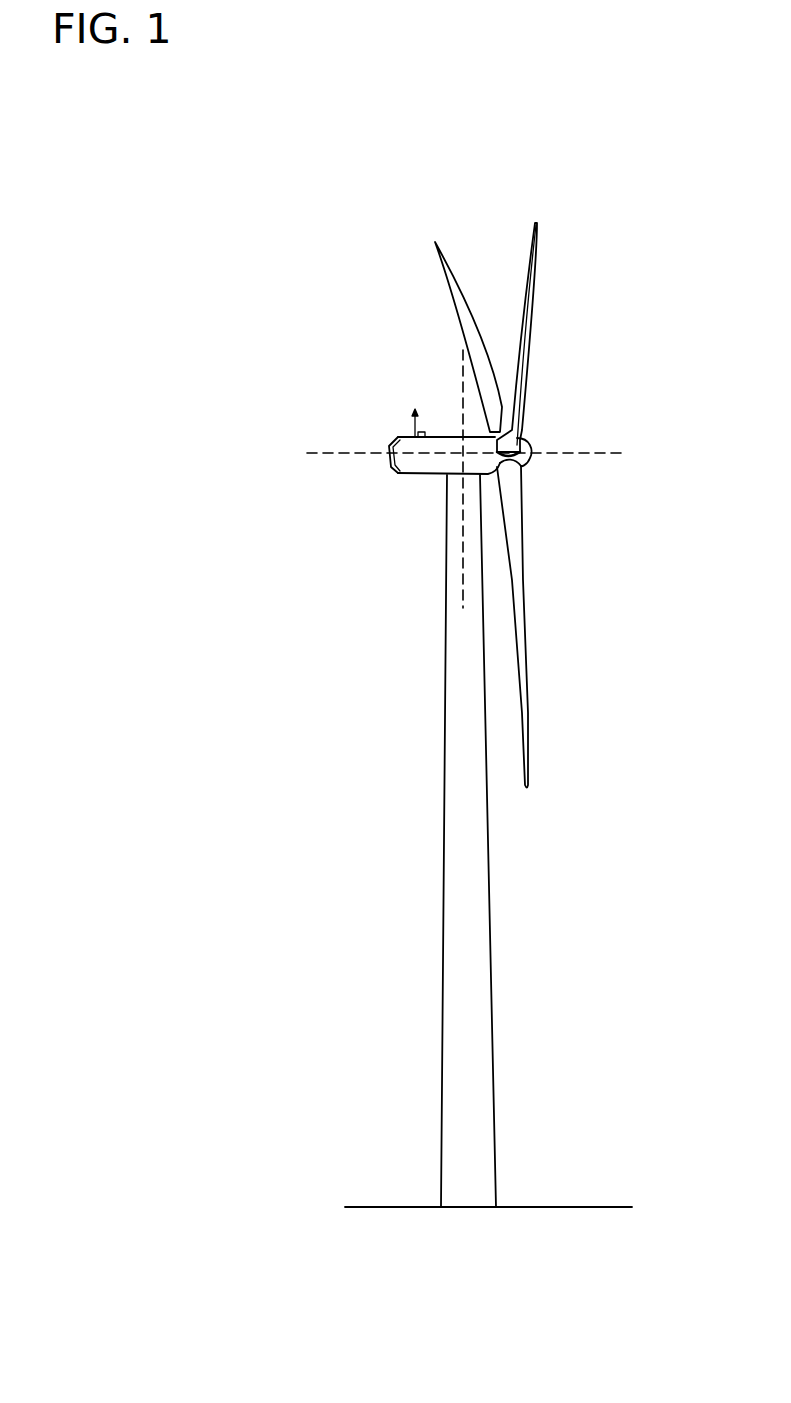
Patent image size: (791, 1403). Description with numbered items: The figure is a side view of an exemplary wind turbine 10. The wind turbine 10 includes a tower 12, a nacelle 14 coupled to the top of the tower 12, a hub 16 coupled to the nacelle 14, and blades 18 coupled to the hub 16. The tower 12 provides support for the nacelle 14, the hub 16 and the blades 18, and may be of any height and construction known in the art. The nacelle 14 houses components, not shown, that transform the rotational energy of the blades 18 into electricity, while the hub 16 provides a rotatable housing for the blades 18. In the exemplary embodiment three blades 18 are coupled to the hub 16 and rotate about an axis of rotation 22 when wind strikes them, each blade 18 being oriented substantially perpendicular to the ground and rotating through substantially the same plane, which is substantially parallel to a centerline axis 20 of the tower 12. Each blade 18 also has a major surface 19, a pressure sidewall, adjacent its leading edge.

The wind turbine 10 is at (229, 248).
The tower 12 is at (441, 990).
The nacelle 14 is at (416, 476).
The hub 16 is at (528, 446).
The blade 18 is at (524, 615).
The major surface 19 is at (518, 398).
The centerline axis 20 is at (462, 383).
The axis of rotation 22 is at (593, 455).